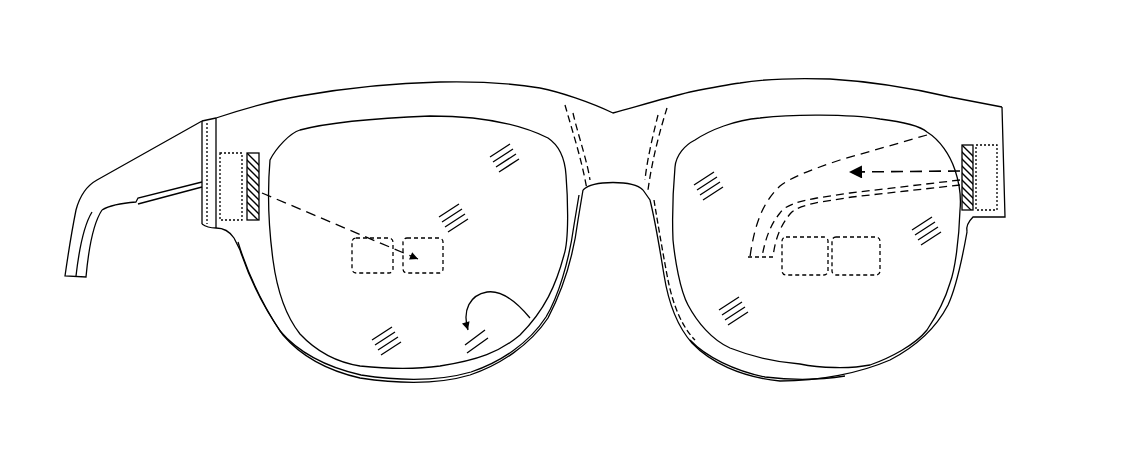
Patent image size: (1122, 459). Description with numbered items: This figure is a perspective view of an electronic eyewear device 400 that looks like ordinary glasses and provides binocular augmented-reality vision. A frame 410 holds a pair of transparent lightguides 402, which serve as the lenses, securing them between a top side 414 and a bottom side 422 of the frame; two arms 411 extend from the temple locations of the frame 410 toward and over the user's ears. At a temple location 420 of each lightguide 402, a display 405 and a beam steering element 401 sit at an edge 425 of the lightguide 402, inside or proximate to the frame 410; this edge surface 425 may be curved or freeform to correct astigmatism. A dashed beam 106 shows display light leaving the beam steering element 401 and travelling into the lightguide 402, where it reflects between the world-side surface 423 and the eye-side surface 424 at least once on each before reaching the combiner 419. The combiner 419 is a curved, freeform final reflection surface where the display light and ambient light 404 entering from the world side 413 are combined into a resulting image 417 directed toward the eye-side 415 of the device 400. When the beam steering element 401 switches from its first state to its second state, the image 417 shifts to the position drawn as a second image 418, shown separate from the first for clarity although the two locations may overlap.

The electronic eyewear device 400 is at (1037, 84).
The beam steering element 401 is at (262, 192).
The lightguide 402 is at (381, 326).
The light from the world side 404 is at (825, 346).
The display 405 is at (228, 229).
The projected light beam 106 is at (357, 234).
The frame 410 is at (254, 116).
The arms 411 is at (189, 182).
The world side 413 is at (256, 229).
The frame top bar 414 is at (731, 84).
The eye-side 415 is at (563, 86).
The resulting image 417 is at (445, 267).
The second image 418 is at (350, 262).
The combiner 419 is at (427, 260).
The temple location 420 is at (1011, 153).
The lens rim 422 is at (742, 373).
The world-side surface 423 is at (483, 349).
The eye-side surface 424 is at (553, 326).
The edge of the lightguide 425 is at (272, 167).